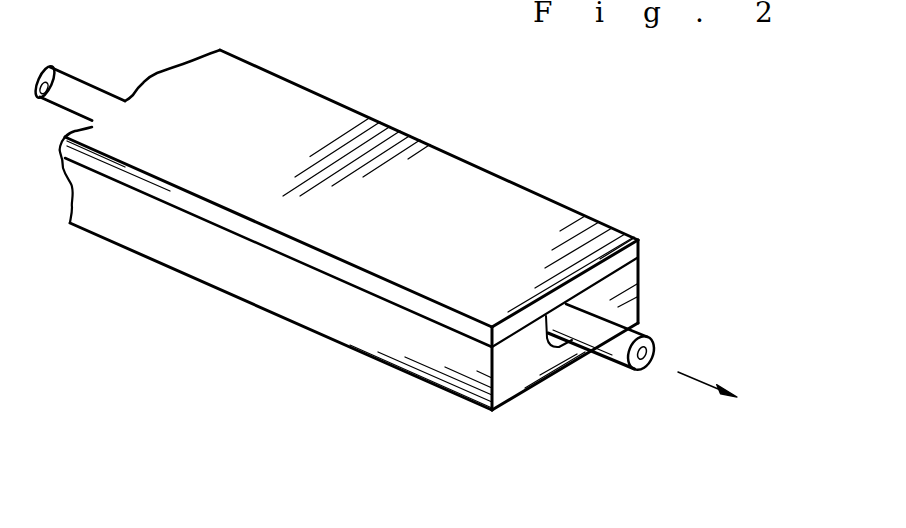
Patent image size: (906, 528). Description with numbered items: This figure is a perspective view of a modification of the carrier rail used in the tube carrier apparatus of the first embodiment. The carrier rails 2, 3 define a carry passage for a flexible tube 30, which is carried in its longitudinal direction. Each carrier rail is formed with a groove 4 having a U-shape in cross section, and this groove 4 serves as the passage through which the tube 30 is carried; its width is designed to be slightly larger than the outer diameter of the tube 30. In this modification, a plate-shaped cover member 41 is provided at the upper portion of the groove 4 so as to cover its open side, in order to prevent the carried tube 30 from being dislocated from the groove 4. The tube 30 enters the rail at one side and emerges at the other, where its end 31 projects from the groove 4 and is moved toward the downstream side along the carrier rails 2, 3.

The carrier rail 2 is at (349, 275).
The carrier rail 3 is at (565, 325).
The groove 4 is at (551, 347).
The flexible tube 30 is at (83, 98).
The end of the tube 31 is at (640, 372).
The plate-shaped cover member 41 is at (447, 175).